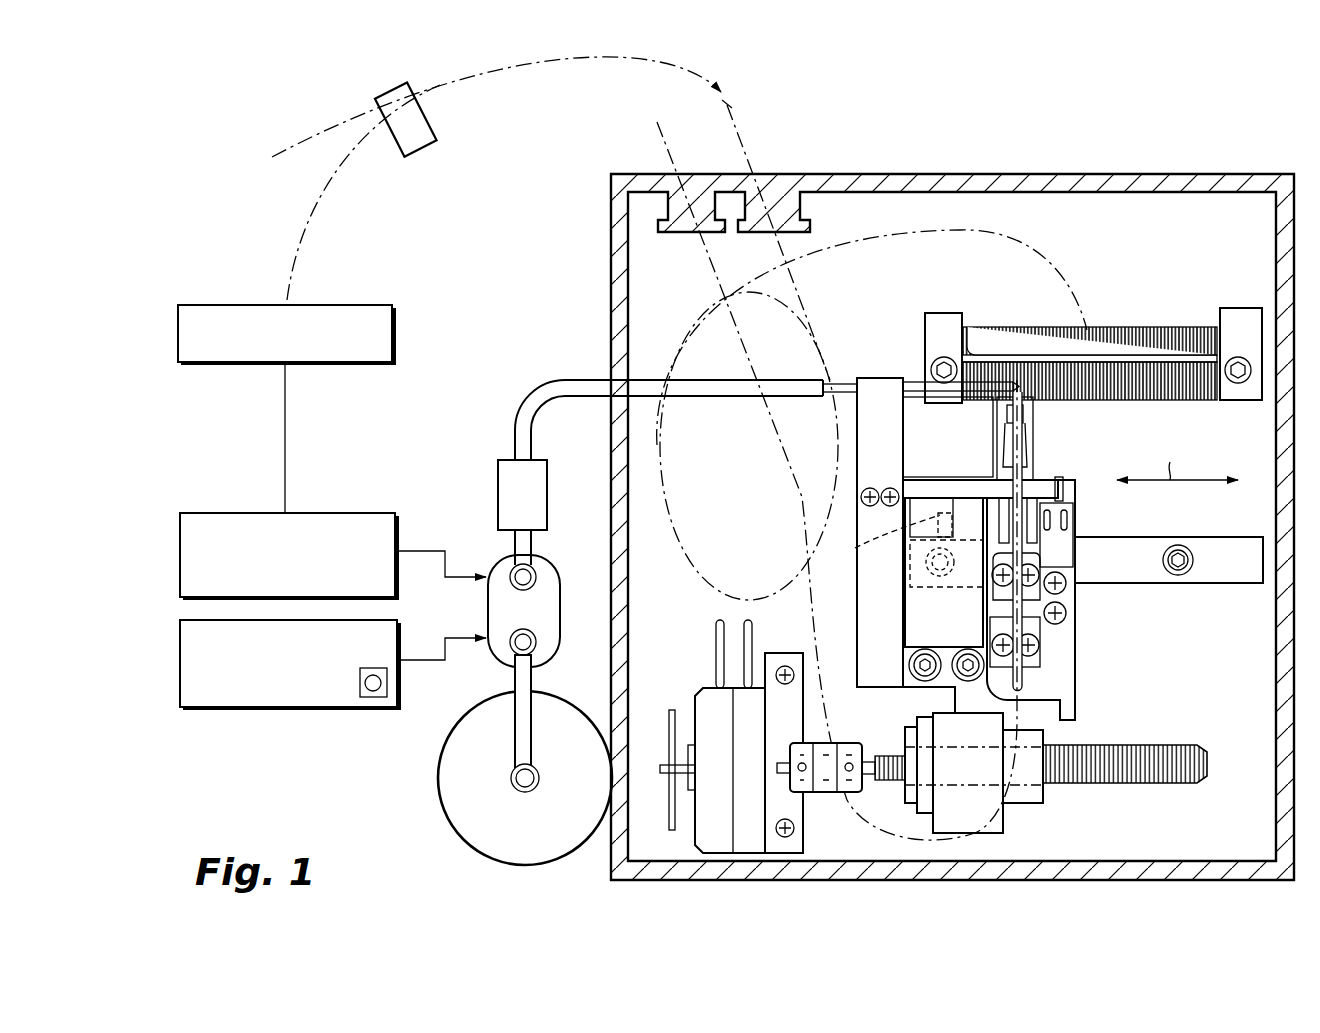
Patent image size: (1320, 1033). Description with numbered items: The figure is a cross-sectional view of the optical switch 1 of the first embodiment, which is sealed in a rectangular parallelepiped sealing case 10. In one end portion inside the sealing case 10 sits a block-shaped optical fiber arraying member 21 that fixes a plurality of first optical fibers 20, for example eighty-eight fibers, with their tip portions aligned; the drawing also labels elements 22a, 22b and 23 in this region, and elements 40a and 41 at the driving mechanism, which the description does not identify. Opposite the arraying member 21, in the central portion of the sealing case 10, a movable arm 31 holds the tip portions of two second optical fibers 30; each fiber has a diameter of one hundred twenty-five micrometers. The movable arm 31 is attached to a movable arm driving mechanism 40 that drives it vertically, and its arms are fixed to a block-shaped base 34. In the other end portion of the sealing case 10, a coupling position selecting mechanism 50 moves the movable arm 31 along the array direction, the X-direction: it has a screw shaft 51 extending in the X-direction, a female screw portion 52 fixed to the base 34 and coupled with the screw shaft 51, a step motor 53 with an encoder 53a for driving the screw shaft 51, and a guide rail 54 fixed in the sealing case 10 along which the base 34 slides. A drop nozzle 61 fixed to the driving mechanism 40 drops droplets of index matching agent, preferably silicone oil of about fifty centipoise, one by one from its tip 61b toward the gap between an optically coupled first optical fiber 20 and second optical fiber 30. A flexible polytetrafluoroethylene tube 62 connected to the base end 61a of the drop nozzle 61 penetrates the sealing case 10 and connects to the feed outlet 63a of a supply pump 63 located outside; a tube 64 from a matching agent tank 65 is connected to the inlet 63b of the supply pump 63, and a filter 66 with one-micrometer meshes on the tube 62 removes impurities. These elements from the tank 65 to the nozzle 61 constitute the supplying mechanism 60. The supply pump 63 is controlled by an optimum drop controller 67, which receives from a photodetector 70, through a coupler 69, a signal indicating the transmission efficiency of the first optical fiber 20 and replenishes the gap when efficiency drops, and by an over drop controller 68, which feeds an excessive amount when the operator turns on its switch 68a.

The optical switch 1 is at (952, 488).
The sealing case 10 is at (1180, 172).
The first optical fibers 20 is at (1040, 268).
The optical fiber arraying member 21 is at (1238, 318).
The upper heater coil 22a is at (1167, 327).
The lower heater coil 22b is at (1187, 390).
The support block 23 is at (963, 328).
The second optical fibers 30 is at (1032, 392).
The movable arm 31 is at (1037, 447).
The base 34 is at (1077, 660).
The movable arm driving mechanism 40 is at (856, 606).
The holder portion 40a is at (884, 543).
The holder block 41 is at (925, 621).
The coupling position selecting mechanism 50 is at (1062, 814).
The screw shaft 51 is at (1155, 785).
The female screw portion 52 is at (1003, 825).
The step motor 53 is at (718, 853).
The encoder 53a is at (671, 712).
The guide rail 54 is at (1227, 578).
The supplying mechanism 60 is at (711, 592).
The drop nozzle 61 is at (915, 380).
The base end 61a is at (840, 382).
The tip 61b is at (948, 437).
The tube 62 is at (574, 380).
The supply pump 63 is at (512, 603).
The feed outlet 63a is at (510, 570).
The inlet 63b is at (535, 651).
The tube 64 is at (520, 757).
The matching agent tank 65 is at (520, 866).
The filter 66 is at (540, 487).
The optimum drop controller 67 is at (368, 513).
The over drop controller 68 is at (268, 707).
The switch 68a is at (373, 697).
The coupler 69 is at (433, 142).
The photodetector 70 is at (394, 336).